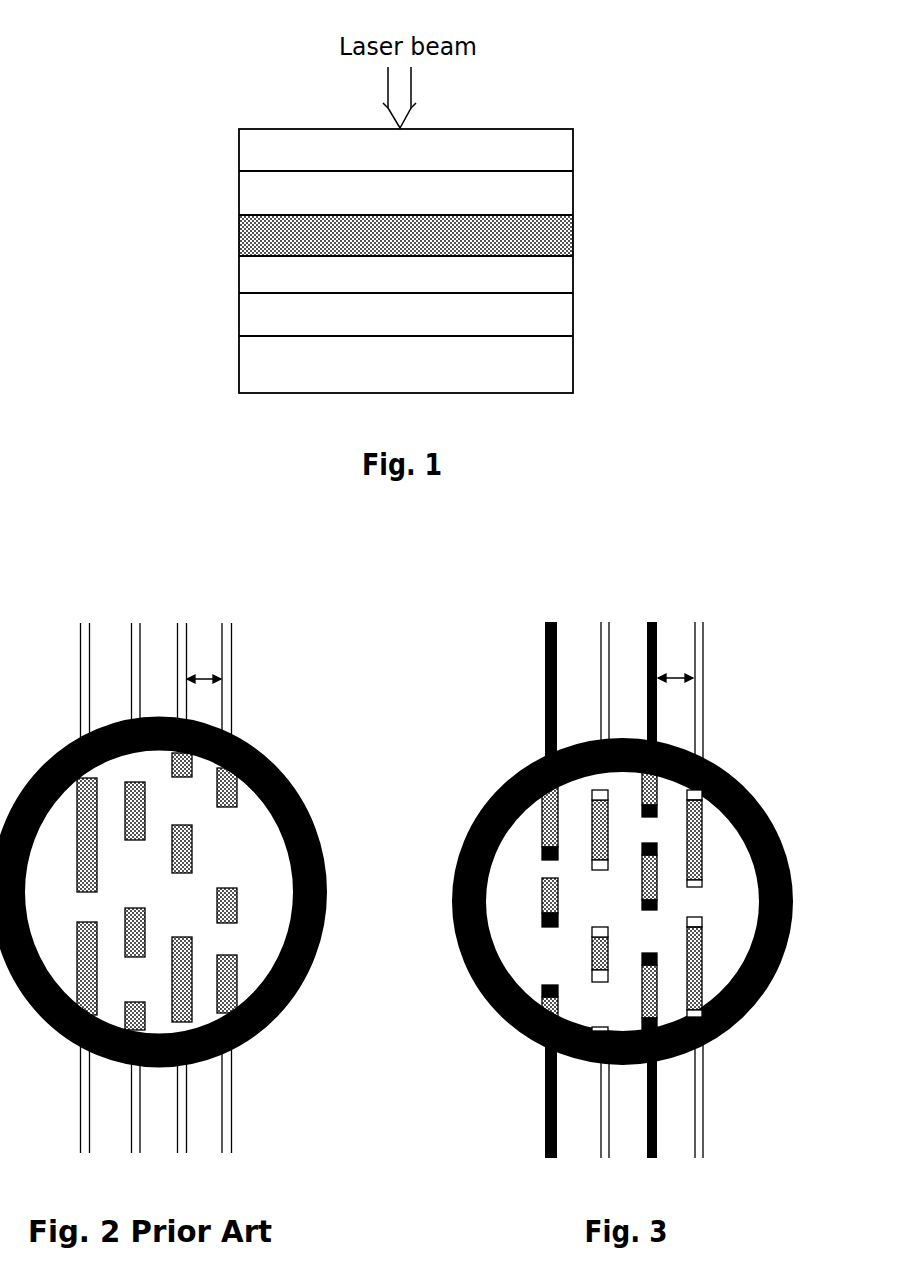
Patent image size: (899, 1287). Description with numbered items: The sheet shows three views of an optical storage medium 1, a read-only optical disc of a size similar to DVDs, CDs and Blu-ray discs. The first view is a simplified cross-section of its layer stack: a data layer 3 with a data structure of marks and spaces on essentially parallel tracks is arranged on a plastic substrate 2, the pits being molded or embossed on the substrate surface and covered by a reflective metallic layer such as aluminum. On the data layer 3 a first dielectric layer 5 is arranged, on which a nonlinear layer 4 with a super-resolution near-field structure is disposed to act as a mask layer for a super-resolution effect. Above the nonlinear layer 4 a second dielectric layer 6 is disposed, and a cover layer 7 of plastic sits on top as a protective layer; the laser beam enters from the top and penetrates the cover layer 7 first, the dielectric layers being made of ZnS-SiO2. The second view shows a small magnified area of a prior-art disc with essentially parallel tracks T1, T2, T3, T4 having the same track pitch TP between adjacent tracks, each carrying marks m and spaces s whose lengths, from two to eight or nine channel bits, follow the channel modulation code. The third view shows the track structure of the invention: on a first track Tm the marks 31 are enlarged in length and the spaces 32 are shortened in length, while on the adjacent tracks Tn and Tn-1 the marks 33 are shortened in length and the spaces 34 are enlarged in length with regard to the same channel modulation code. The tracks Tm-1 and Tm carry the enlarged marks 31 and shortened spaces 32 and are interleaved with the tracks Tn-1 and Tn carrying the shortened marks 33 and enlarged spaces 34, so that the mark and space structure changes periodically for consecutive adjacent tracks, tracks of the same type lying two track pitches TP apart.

In FIG. 1, the optical storage medium 1 is at (297, 396).
In FIG. 1, the substrate 2 is at (562, 372).
In FIG. 1, the data layer 3 is at (248, 323).
In FIG. 1, the nonlinear layer 4 is at (246, 229).
In FIG. 1, the first dielectric layer 5 is at (561, 274).
In FIG. 1, the second dielectric layer 6 is at (560, 193).
In FIG. 1, the cover layer 7 is at (246, 151).
In FIG. 2, the track T1 is at (84, 867).
In FIG. 2, the track T2 is at (135, 867).
In FIG. 2, the track T3 is at (179, 867).
In FIG. 2, the track T4 is at (227, 867).
In FIG. 2, the track pitch TP is at (202, 678).
In FIG. 3, the track pitch TP is at (667, 677).
In FIG. 2, the marks m is at (233, 903).
In FIG. 2, the spaces s is at (192, 897).
In FIG. 3, the track Tm-1 is at (542, 869).
In FIG. 3, the track Tn-1 is at (599, 869).
In FIG. 3, the first track Tm is at (655, 869).
In FIG. 3, the adjacent track Tn is at (691, 869).
In FIG. 3, the marks 31 is at (650, 872).
In FIG. 3, the spaces 32 is at (650, 828).
In FIG. 3, the marks 33 is at (600, 947).
In FIG. 3, the spaces 34 is at (610, 893).